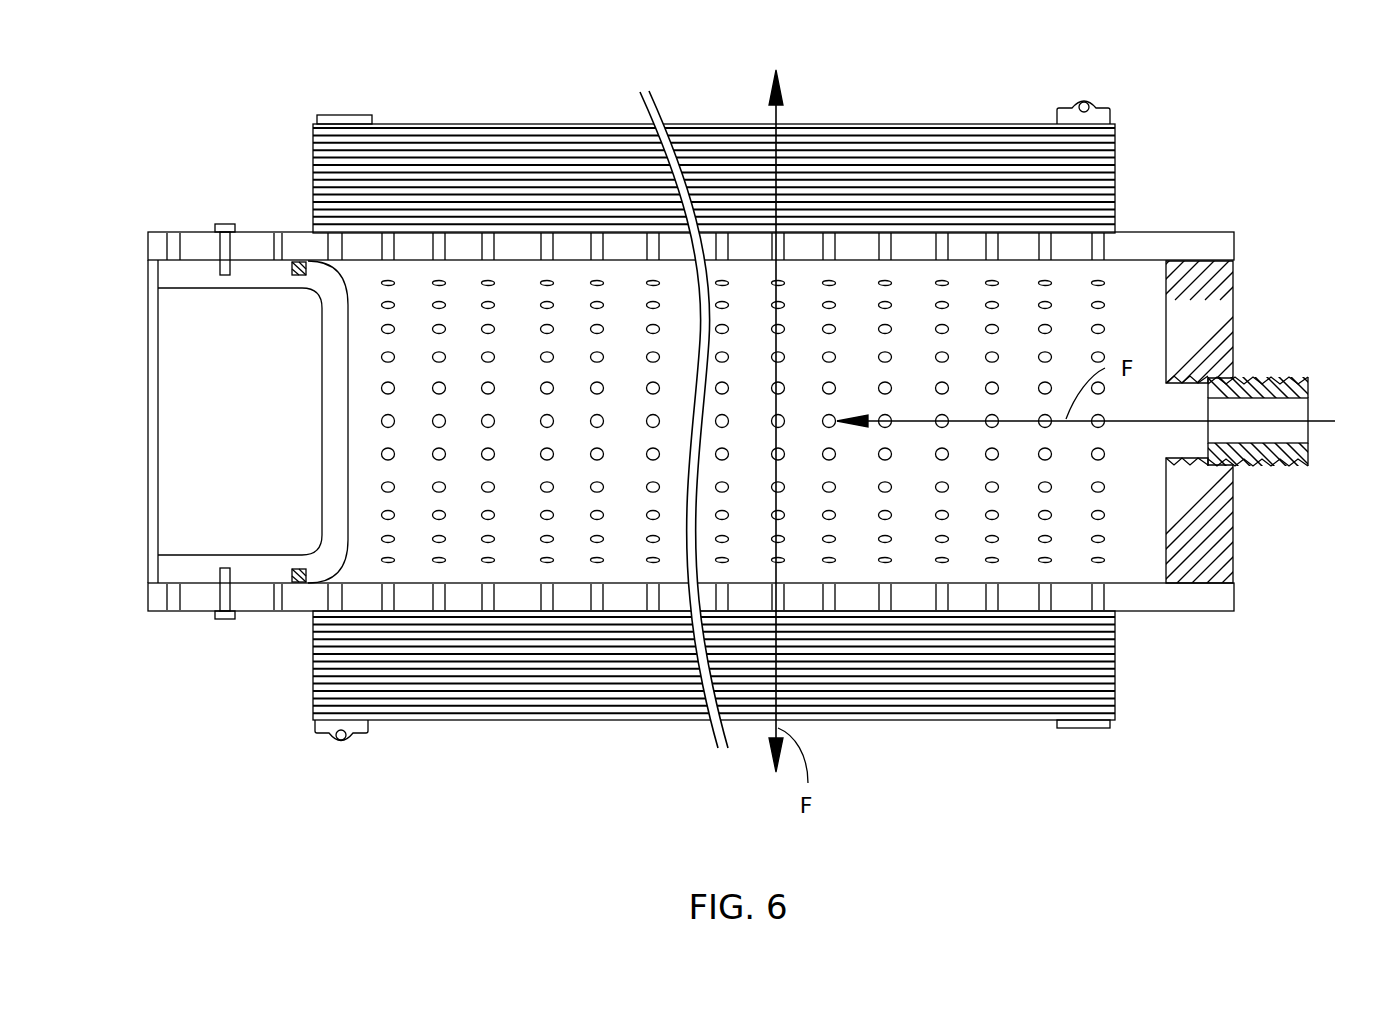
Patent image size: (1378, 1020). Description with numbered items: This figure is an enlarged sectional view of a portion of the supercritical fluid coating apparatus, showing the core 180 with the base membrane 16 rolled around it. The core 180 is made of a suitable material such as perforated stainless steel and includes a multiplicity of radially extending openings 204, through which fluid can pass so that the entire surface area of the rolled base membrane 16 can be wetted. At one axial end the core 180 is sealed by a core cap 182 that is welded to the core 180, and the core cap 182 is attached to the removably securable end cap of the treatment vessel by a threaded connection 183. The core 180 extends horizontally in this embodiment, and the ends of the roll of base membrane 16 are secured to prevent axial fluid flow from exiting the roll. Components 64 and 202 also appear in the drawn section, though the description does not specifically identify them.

The base membrane 16 is at (910, 122).
The mounting bracket 64 is at (1083, 96).
The core 180 is at (1192, 245).
The core cap 182 is at (1223, 527).
The threaded connection 183 is at (1299, 383).
The end cap 202 is at (197, 272).
The radially extending openings 204 is at (778, 597).